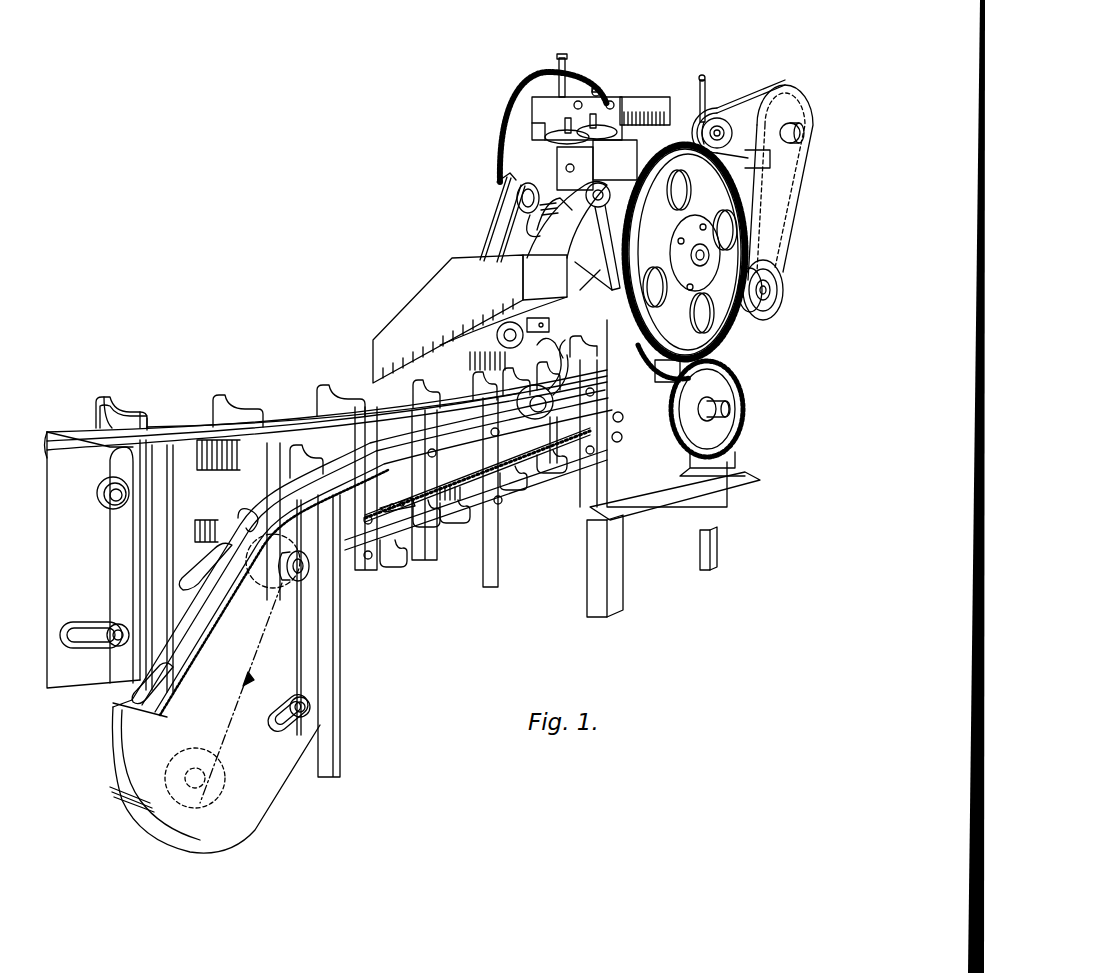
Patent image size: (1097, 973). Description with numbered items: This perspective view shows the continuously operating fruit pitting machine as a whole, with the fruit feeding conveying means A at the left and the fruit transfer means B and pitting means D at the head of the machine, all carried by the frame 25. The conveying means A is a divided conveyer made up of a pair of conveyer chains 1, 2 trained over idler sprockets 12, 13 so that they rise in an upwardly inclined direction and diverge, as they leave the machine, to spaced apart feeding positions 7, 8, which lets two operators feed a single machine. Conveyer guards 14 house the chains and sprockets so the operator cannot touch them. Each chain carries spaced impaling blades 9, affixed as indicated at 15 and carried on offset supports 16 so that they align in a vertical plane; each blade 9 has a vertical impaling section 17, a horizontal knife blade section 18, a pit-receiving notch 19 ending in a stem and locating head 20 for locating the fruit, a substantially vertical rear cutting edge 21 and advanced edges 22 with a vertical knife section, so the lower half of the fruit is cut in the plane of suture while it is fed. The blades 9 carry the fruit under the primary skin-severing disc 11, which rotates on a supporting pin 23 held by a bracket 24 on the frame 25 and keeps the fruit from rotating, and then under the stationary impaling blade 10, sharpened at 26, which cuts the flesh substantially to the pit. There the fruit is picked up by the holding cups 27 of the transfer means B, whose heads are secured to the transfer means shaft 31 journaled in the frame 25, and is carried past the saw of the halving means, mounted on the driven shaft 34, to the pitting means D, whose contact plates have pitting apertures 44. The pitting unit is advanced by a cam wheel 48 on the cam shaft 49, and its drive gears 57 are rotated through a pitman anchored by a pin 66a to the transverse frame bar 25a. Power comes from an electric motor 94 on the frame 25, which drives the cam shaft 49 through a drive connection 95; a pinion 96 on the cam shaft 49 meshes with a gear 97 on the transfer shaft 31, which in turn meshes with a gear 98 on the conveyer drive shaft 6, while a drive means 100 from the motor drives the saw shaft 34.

The conveyer chain 1 is at (403, 512).
The conveyer chain 2 is at (206, 524).
The conveyer drive shaft 6 is at (727, 410).
The feeding position 7 is at (244, 514).
The feeding position 8 is at (78, 395).
The impaling blades 9 is at (250, 396).
The stationary impaling blade 10 is at (562, 322).
The primary skin-severing disc 11 is at (492, 346).
The idler sprocket 12 is at (230, 800).
The idler sprocket 13 is at (270, 598).
The conveyer guards 14 is at (302, 416).
The blade affixing means 15 is at (402, 522).
The offset support 16 is at (352, 545).
The vertical impaling section 17 is at (108, 462).
The knife blade section 18 is at (138, 410).
The pit-receiving notch 19 is at (116, 412).
The stem and locating head 20 is at (104, 392).
The vertical cutting edge 21 is at (108, 402).
The advanced edges 22 is at (150, 416).
The supporting pin 23 is at (500, 330).
The bracket 24 is at (528, 322).
The frame 25 is at (655, 445).
The transverse frame bar 25a is at (553, 100).
The sharpened edge 26 is at (552, 335).
The holding cups 27 is at (552, 214).
The transfer means shaft 31 is at (688, 290).
The saw shaft 34 is at (770, 290).
The pitting apertures 44 is at (640, 185).
The cam wheel 48 is at (652, 150).
The cam shaft 49 is at (770, 130).
The drive gears 57 is at (612, 178).
The pin 66a is at (604, 90).
The electric motor 94 is at (686, 95).
The drive connection 95 is at (520, 100).
The pinion 96 is at (722, 126).
The gear 97 is at (641, 343).
The gear 98 is at (735, 436).
The drive means 100 is at (778, 240).
The fruit feeding conveying means A is at (178, 410).
The fruit transfer means B is at (494, 181).
The pitting means D is at (564, 163).